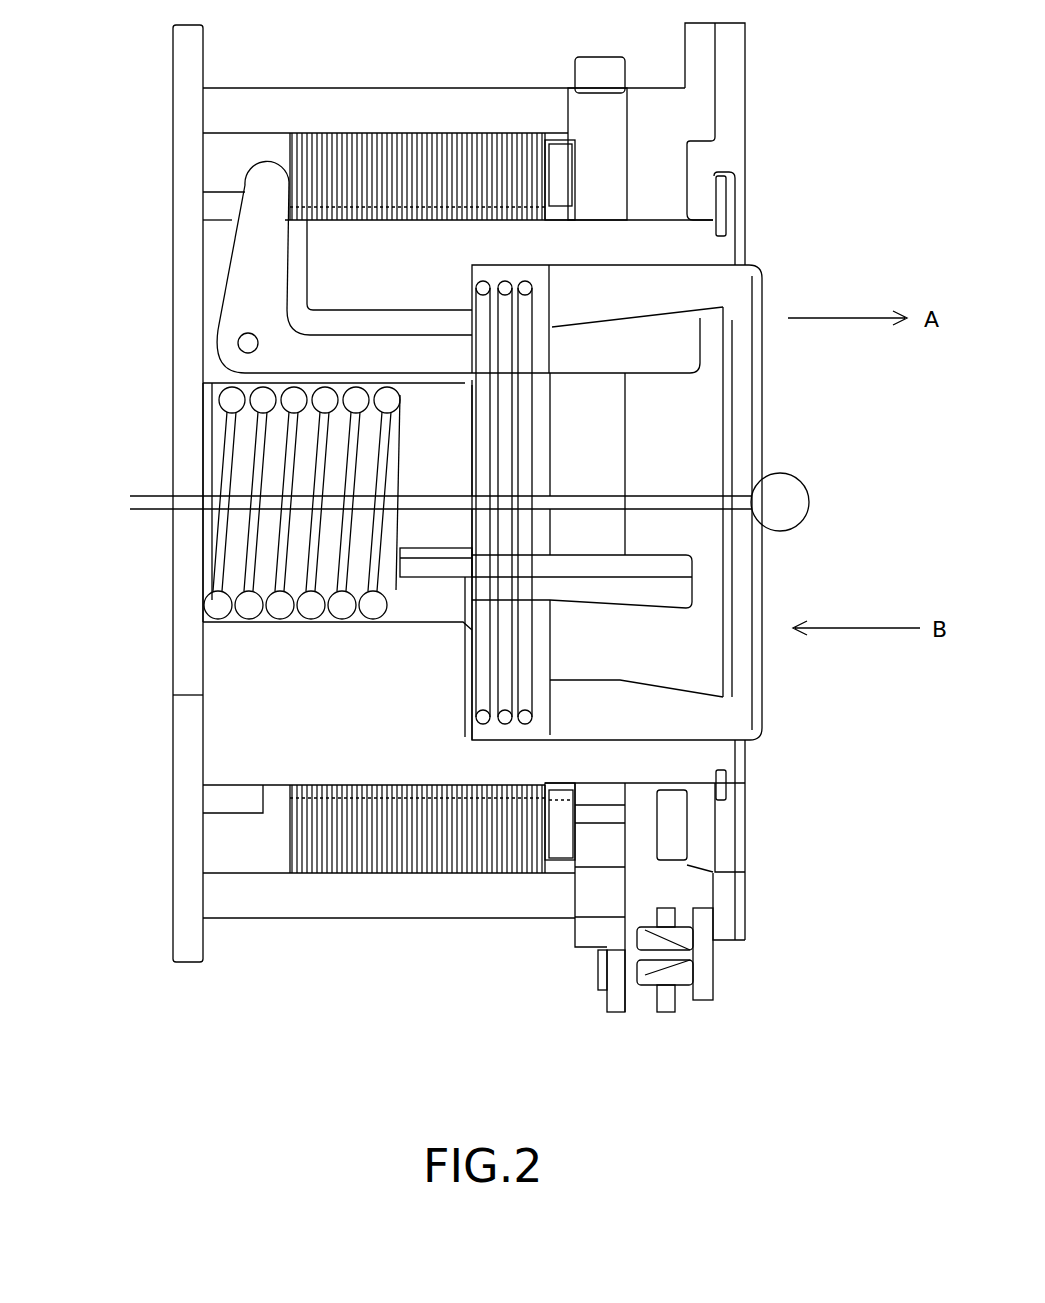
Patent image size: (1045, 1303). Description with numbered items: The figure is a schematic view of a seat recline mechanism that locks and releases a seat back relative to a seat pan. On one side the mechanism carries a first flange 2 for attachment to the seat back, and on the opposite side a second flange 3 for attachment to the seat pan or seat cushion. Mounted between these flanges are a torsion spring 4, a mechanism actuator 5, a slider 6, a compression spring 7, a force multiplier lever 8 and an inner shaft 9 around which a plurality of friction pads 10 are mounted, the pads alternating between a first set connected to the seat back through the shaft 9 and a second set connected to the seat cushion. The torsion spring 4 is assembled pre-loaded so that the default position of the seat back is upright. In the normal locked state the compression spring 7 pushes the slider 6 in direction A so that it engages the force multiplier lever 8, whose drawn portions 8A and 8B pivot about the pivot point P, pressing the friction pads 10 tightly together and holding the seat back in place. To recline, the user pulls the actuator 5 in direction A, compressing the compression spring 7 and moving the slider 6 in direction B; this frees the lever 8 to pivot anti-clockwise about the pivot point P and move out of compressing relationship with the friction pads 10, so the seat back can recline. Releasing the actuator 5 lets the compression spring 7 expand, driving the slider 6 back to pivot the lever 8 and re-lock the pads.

The first flange 2 is at (733, 848).
The second flange 3 is at (175, 862).
The torsion spring 4 is at (228, 438).
The mechanism actuator 5 is at (135, 500).
The slider 6 is at (767, 585).
The compression spring 7 is at (527, 312).
The force multiplier lever 8 is at (392, 197).
The armature horizontal portion 8A is at (678, 353).
The armature upright portion 8B is at (268, 173).
The inner shaft 9 is at (267, 685).
The friction pads 10 is at (427, 157).
The pivot point P is at (247, 342).